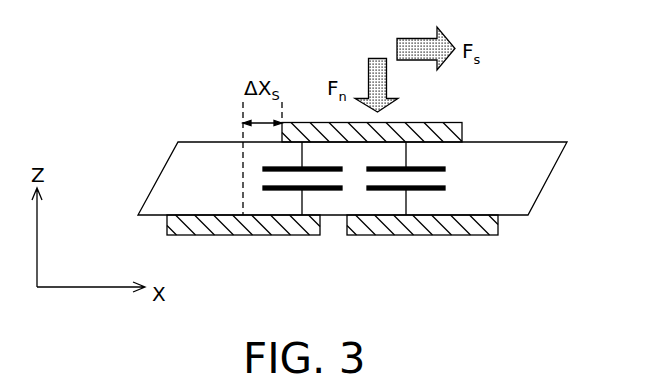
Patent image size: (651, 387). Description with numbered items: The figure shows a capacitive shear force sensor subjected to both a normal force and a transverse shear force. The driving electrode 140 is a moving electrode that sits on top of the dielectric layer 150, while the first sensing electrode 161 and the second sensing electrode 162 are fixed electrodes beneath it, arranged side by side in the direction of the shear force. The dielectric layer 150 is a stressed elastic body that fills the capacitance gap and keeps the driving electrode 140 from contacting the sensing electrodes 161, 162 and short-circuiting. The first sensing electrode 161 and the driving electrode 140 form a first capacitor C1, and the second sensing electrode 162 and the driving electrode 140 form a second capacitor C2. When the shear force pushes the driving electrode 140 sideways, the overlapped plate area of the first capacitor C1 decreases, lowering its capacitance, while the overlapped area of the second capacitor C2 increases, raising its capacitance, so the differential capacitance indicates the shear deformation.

The driving electrode 140 is at (455, 133).
The dielectric layer 150 is at (155, 180).
The first sensing electrode 161 is at (258, 235).
The second sensing electrode 162 is at (430, 237).
The first capacitor C1 is at (258, 178).
The second capacitor C2 is at (424, 178).